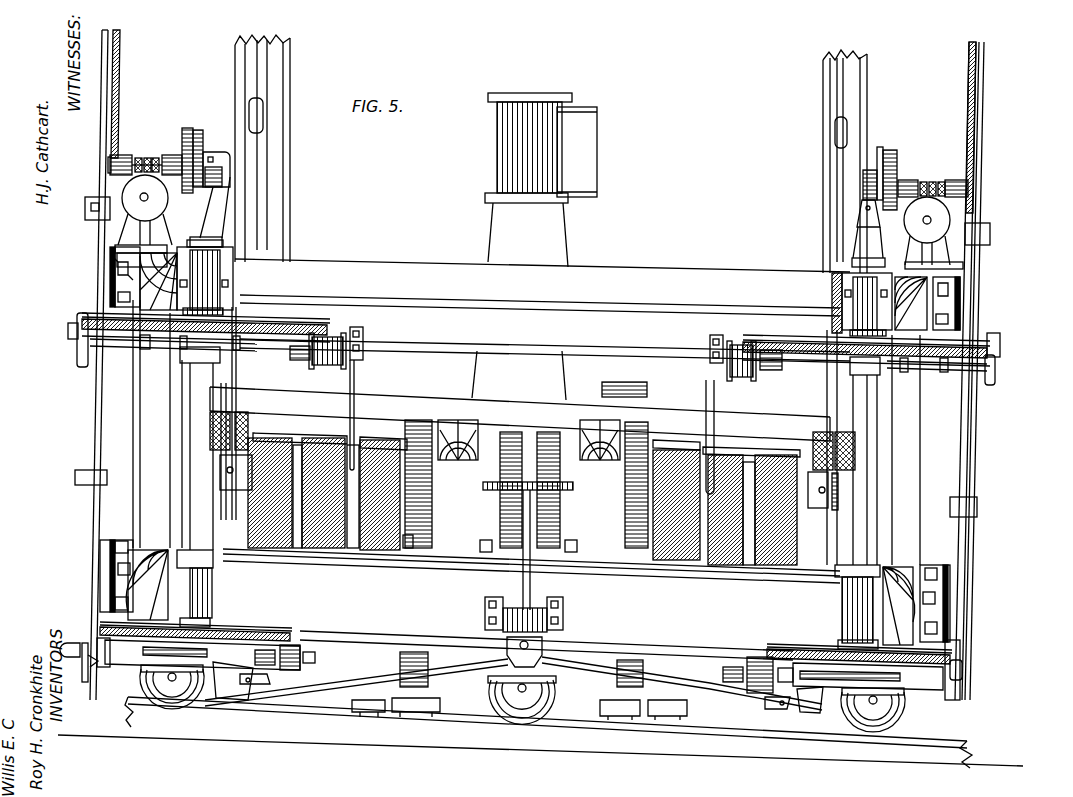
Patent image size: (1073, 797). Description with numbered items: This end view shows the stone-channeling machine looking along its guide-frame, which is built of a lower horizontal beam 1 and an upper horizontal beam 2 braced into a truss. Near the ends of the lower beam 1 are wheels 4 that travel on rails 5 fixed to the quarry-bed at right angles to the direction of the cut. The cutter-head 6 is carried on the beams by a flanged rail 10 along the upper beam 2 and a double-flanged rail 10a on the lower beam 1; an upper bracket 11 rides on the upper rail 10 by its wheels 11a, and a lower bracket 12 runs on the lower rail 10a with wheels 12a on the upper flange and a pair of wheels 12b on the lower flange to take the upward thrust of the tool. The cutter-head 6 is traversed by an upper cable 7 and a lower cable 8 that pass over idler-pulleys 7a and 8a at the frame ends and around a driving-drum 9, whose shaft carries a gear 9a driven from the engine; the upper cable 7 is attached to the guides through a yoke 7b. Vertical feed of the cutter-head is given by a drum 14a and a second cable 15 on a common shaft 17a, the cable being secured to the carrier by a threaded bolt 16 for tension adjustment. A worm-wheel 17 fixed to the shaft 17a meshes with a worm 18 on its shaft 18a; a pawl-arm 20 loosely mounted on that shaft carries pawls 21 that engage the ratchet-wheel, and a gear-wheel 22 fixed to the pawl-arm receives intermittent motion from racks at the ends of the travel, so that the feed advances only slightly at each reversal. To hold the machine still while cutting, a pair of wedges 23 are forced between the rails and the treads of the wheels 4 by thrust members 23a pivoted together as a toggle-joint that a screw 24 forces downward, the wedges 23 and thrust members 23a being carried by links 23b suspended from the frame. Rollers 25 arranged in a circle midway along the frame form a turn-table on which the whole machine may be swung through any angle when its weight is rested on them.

The lower horizontal beam 1 is at (132, 667).
The upper horizontal beam 2 is at (263, 267).
The wheels 4 is at (160, 702).
The rails 5 is at (300, 715).
The cutter-head 6 is at (103, 386).
The upper cable 7 is at (72, 334).
The idler-pulleys 7a is at (80, 317).
The yoke 7b is at (990, 357).
The lower cable 8 is at (100, 623).
The idler-pulleys 8a is at (88, 658).
The driving-drum 9 is at (370, 453).
The gear 9a is at (417, 420).
The flanged rail 10 is at (98, 280).
The double-flanged rail 10a is at (125, 577).
The bracket 11 is at (108, 260).
The wheels 11a is at (100, 265).
The bracket 12 is at (115, 550).
The wheels 12a is at (112, 538).
The wheels 12b is at (115, 600).
The drum 14a is at (536, 222).
The second cable 15 is at (543, 121).
The threaded bolt 16 is at (110, 74).
The worm-wheel 17 is at (138, 157).
The shaft 17a is at (539, 222).
The worm 18 is at (163, 157).
The shaft 18a is at (110, 162).
The pawl-arm 20 is at (187, 128).
The pawls 21 is at (203, 150).
The gear-wheel 22 is at (215, 175).
The wedges 23 is at (217, 698).
The thrust members 23a is at (493, 657).
The links 23b is at (515, 695).
The screw 24 is at (530, 576).
The rollers 25 is at (420, 713).